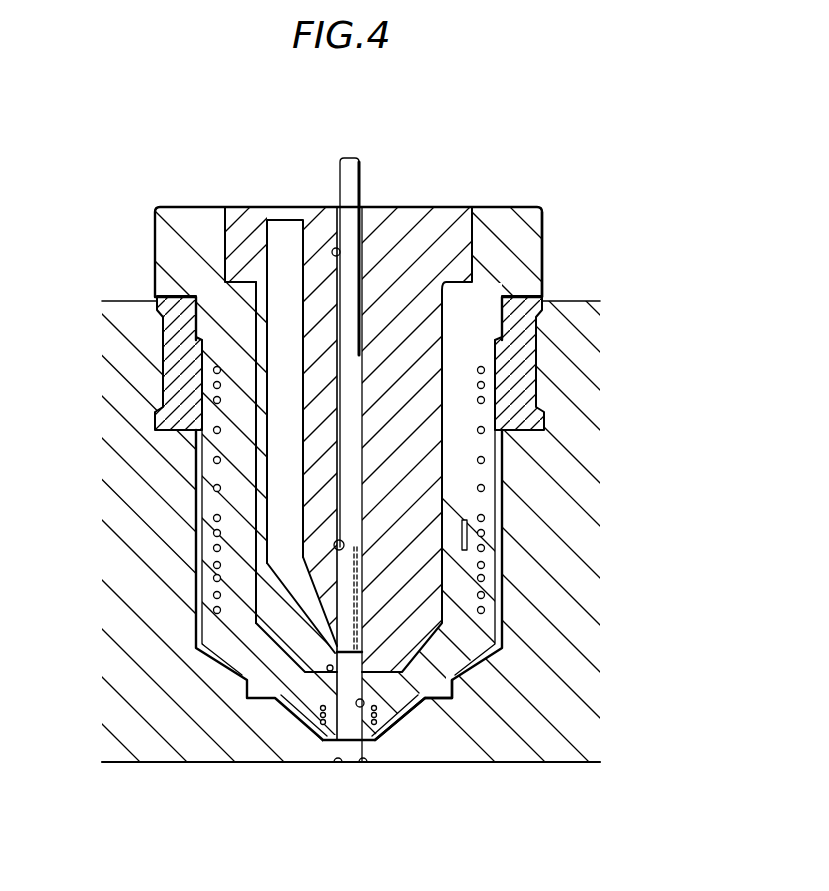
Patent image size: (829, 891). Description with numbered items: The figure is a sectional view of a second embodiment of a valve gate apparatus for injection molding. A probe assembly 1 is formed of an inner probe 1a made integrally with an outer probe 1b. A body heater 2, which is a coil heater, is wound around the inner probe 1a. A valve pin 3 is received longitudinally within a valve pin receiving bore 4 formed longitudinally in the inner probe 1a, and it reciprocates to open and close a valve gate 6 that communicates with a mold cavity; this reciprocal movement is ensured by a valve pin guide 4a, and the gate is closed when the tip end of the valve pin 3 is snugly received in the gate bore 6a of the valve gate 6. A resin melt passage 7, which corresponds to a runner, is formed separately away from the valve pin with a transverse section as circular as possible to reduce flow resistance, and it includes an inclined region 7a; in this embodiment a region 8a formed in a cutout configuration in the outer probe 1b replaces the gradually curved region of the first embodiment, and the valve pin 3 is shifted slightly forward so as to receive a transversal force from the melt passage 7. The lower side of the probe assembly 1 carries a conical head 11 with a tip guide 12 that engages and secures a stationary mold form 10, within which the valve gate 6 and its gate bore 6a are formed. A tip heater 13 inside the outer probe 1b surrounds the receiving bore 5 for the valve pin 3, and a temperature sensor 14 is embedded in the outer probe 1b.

The probe assembly 1 is at (618, 212).
The inner probe 1a is at (448, 246).
The outer probe 1b is at (523, 278).
The body heater 2 is at (500, 489).
The valve pin 3 is at (362, 185).
The valve pin receiving bore 4 is at (332, 252).
The valve pin guide 4a is at (334, 545).
The receiving bore 5 is at (455, 728).
The valve gate 6 is at (365, 763).
The gate bore 6a is at (338, 763).
The resin melt passage 7 is at (280, 312).
The inclined region 7a is at (312, 612).
The cutout region 8a is at (332, 672).
The stationary mold form 10 is at (548, 742).
The conical head 11 is at (490, 675).
The tip guide 12 is at (247, 693).
The tip heater 13 is at (418, 732).
The temperature sensor 14 is at (468, 537).